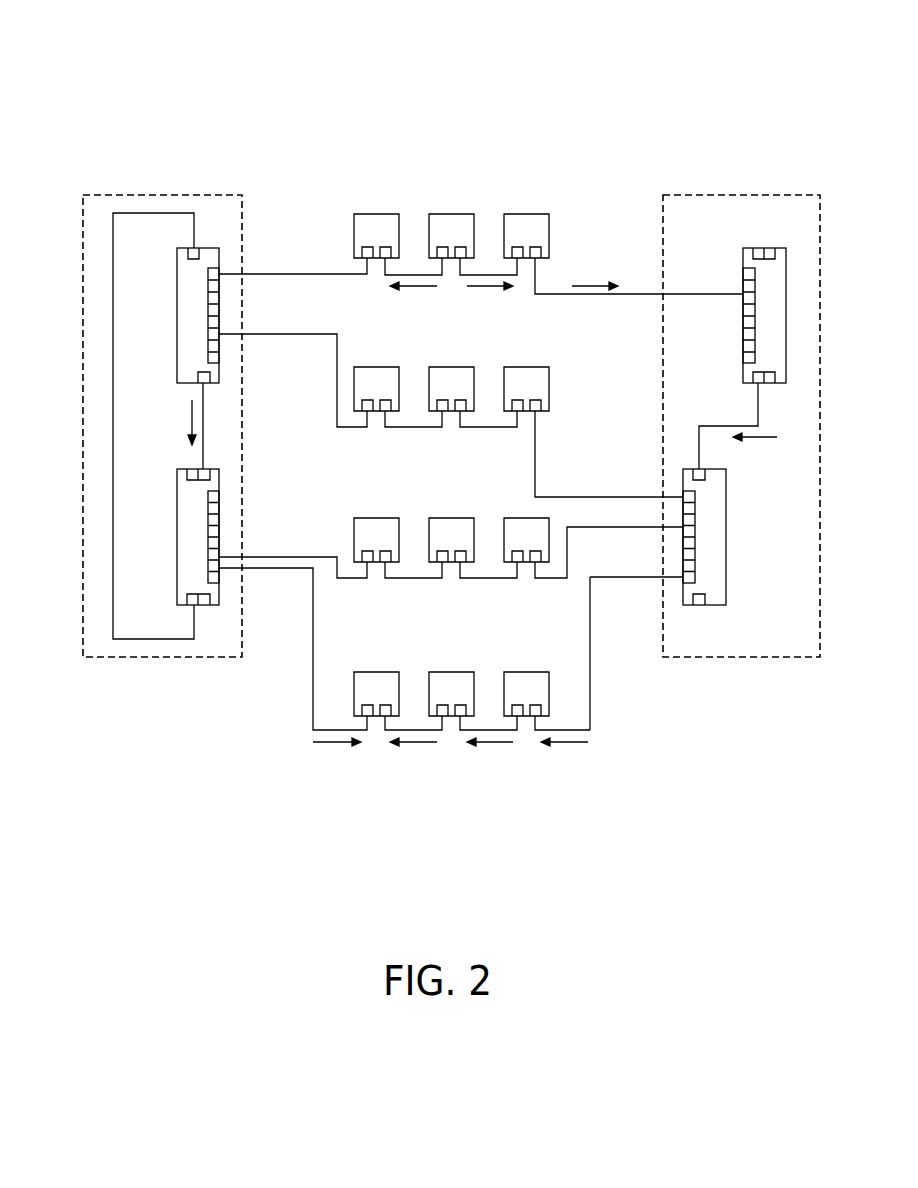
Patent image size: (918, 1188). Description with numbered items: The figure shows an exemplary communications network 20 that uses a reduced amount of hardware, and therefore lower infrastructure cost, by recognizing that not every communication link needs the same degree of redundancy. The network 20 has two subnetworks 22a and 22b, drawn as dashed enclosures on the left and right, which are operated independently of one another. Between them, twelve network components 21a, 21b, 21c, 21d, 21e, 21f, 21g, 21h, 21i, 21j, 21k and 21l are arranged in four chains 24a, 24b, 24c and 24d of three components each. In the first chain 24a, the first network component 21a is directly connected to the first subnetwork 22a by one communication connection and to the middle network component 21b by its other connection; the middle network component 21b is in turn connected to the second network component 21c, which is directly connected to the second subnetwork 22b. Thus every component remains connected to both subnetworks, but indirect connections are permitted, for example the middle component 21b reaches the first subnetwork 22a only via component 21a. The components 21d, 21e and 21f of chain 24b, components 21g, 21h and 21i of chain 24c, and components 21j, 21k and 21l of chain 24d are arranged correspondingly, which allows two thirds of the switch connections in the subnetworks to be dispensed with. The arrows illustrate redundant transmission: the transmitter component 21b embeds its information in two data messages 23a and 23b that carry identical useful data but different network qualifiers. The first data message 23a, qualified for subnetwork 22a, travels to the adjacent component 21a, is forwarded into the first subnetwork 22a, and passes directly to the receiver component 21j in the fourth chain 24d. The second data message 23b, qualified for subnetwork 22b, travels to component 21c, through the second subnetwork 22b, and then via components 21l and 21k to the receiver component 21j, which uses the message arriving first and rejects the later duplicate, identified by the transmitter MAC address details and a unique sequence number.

The communications network 20 is at (483, 100).
The first network component 21a is at (371, 214).
The middle network component 21b is at (446, 214).
The second network component 21c is at (521, 214).
The network component 21d is at (371, 367).
The network component 21e is at (446, 367).
The network component 21f is at (521, 367).
The network component 21g is at (371, 518).
The network component 21h is at (446, 518).
The network component 21i is at (521, 518).
The receiver network component 21j is at (371, 672).
The network component 21k is at (446, 672).
The network component 21l is at (521, 672).
The first subnetwork 22a is at (153, 658).
The second subnetwork 22b is at (748, 658).
The first data message 23a is at (415, 292).
The second data message 23b is at (492, 292).
The first chain 24a is at (573, 241).
The second chain 24b is at (573, 404).
The third chain 24c is at (574, 550).
The fourth chain 24d is at (574, 690).